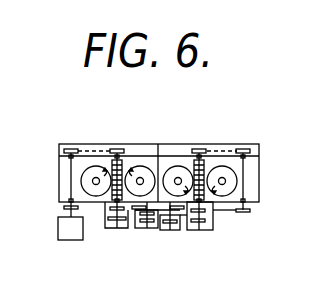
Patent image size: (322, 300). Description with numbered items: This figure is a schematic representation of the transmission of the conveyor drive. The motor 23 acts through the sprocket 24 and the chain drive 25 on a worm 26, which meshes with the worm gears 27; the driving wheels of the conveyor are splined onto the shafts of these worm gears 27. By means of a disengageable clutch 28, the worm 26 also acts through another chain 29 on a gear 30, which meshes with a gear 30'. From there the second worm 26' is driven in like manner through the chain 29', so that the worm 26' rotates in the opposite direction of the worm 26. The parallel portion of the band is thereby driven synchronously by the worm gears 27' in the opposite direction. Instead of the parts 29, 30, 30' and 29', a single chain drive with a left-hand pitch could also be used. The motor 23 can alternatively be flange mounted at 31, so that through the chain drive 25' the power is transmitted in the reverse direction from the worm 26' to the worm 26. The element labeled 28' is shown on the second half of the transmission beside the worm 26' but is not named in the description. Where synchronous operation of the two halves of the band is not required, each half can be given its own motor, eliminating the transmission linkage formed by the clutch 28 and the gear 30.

The motor 23 is at (58, 222).
The sprocket 24 is at (59, 146).
The chain drive 25 is at (69, 167).
The chain drive 25' is at (235, 152).
The worm 26 is at (127, 161).
The worm 26' is at (196, 173).
The worm gears 27 is at (114, 145).
The worm gears 27' is at (216, 145).
The disengageable clutch 28 is at (107, 230).
The gear 28' is at (240, 240).
The chain 29 is at (149, 229).
The chain 29' is at (211, 232).
The gear 30 is at (163, 236).
The gear 30' is at (195, 236).
The flange mounting location 31 is at (243, 212).